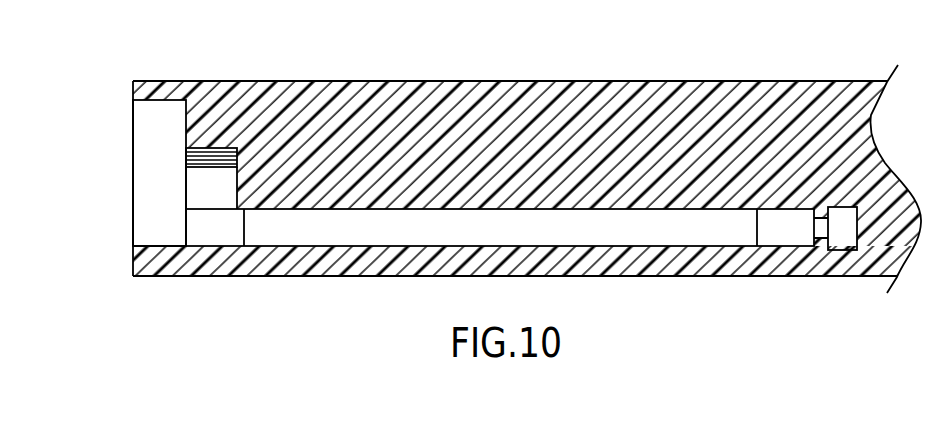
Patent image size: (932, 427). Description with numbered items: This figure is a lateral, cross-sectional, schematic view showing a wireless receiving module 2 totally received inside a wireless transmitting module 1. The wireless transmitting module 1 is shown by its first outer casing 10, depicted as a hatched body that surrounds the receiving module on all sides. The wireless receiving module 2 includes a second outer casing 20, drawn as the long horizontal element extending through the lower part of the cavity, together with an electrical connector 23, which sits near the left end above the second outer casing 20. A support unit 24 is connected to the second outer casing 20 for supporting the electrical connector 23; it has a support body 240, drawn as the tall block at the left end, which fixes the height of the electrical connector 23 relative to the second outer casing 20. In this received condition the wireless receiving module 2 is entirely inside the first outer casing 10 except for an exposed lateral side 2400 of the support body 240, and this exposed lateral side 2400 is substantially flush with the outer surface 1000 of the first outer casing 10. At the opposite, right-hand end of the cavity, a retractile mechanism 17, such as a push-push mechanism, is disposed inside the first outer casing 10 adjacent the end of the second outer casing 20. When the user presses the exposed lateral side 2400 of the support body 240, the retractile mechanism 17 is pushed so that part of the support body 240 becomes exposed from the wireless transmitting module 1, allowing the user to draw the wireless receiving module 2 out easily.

The wireless transmitting module 1 is at (651, 81).
The first outer casing 10 is at (724, 100).
The wireless receiving module 2 is at (133, 197).
The support unit 24 is at (148, 126).
The exposed lateral side 2400 is at (133, 153).
The support body 240 is at (148, 224).
The outer surface 1000 is at (137, 266).
The electrical connector 23 is at (222, 167).
The second outer casing 20 is at (655, 232).
The retractile mechanism 17 is at (847, 238).